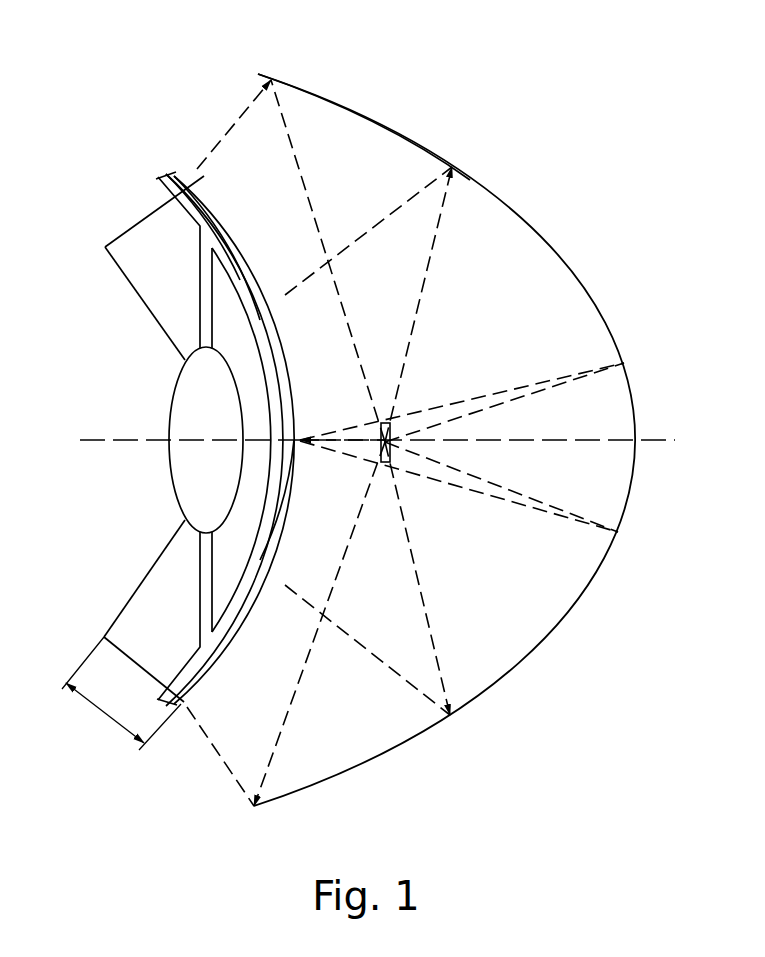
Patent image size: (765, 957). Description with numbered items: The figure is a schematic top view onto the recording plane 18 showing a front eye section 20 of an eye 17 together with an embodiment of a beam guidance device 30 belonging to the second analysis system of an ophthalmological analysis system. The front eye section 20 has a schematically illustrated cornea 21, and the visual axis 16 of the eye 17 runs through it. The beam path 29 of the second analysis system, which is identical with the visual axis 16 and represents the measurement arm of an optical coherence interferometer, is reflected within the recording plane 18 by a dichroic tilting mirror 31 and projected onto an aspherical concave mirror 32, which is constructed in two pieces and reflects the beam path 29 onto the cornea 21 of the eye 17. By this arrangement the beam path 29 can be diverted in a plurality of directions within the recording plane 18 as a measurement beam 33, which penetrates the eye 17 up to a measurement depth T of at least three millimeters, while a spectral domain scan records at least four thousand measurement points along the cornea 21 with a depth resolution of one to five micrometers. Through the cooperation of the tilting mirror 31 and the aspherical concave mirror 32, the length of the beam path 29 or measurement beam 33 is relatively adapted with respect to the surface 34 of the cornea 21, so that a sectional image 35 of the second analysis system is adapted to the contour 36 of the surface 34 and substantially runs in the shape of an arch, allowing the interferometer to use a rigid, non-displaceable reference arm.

The visual axis 16 is at (115, 439).
The eye 17 is at (161, 168).
The recording plane 18 is at (152, 640).
The front eye section 20 is at (229, 163).
The cornea 21 is at (201, 205).
The beam path 29 is at (609, 440).
The beam guidance device 30 is at (501, 195).
The dichroic tilting mirror 31 is at (389, 464).
The aspherical concave mirror 32 is at (533, 228).
The measurement beam 33 is at (253, 98).
The surface 34 is at (290, 497).
The sectional image 35 is at (138, 258).
The contour 36 is at (221, 222).
The measurement depth T is at (121, 693).